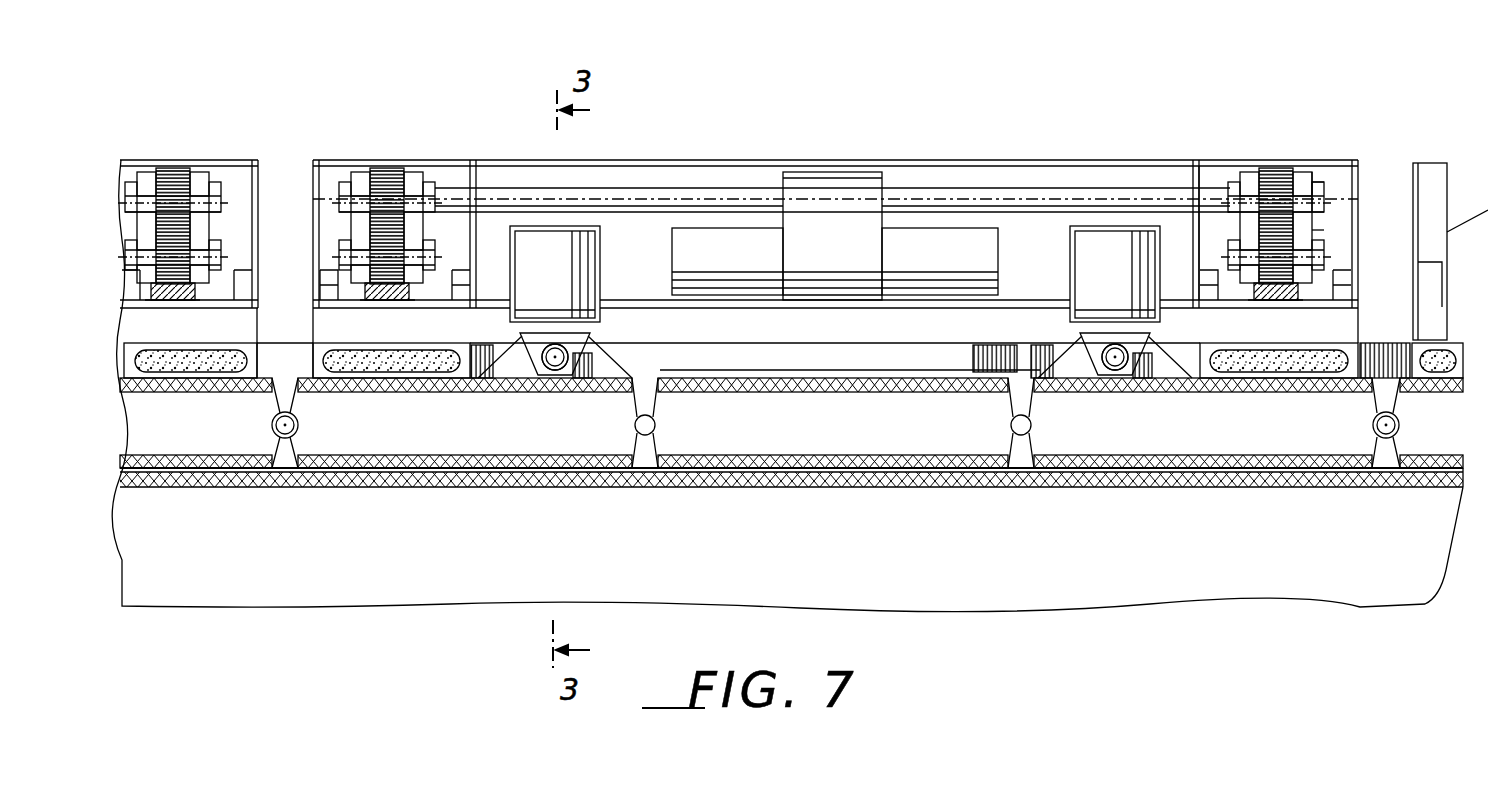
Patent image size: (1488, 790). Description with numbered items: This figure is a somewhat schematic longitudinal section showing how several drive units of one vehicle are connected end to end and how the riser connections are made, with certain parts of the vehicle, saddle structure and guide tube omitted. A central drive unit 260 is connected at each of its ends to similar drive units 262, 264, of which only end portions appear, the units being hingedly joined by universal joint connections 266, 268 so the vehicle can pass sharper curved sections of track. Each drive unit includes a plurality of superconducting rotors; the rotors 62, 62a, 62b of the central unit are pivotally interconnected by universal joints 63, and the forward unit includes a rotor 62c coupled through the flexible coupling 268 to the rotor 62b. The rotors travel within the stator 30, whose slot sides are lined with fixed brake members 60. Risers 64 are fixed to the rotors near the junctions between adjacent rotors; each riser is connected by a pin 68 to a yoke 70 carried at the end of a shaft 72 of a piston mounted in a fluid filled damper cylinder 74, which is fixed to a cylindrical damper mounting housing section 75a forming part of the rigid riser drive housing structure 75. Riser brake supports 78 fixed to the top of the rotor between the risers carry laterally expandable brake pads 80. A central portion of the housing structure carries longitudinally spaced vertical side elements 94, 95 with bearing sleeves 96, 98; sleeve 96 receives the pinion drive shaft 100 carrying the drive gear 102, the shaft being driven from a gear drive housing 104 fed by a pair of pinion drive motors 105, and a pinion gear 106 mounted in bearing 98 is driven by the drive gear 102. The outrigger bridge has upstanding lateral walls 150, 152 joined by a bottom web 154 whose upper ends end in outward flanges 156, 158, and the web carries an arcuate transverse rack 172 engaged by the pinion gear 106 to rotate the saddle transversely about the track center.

The stator 30 is at (412, 490).
The brake member 60 is at (291, 350).
The superconducting rotor 62 is at (468, 478).
The rotor 62a is at (920, 478).
The rotor 62b is at (1207, 478).
The rotor 62c is at (1440, 478).
The universal joint 63 is at (655, 425).
The riser 64 is at (597, 360).
The pin 68 is at (552, 368).
The yoke 70 is at (585, 335).
The shaft 72 is at (556, 303).
The damper cylinder 74 is at (595, 268).
The riser drive housing structure 75 is at (686, 164).
The damper mounting housing section 75a is at (601, 240).
The riser brake support 78 is at (464, 377).
The brake pad 80 is at (190, 372).
The side element 94 is at (1220, 162).
The side element 95 is at (1318, 185).
The bearing sleeve 96 is at (1328, 186).
The bearing sleeve 98 is at (1345, 236).
The pinion drive shaft 100 is at (517, 190).
The drive gear 102 is at (179, 160).
The gear drive housing 104 is at (812, 298).
The pinion drive motor 105 is at (700, 298).
The pinion gear 106 is at (345, 259).
The lateral wall 150 is at (326, 298).
The lateral wall 152 is at (1350, 297).
The bottom web 154 is at (188, 304).
The flange 156 is at (328, 277).
The flange 158 is at (1345, 270).
The arcuate transverse rack 172 is at (190, 304).
The drive unit 260 is at (858, 140).
The drive unit 262 is at (225, 136).
The drive unit 264 is at (1432, 163).
The universal joint connection 266 is at (272, 430).
The universal joint connection 268 is at (1399, 430).